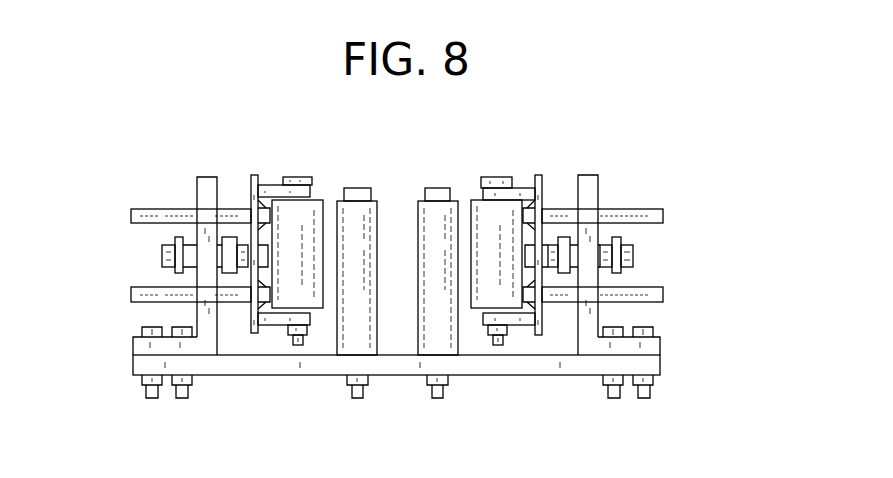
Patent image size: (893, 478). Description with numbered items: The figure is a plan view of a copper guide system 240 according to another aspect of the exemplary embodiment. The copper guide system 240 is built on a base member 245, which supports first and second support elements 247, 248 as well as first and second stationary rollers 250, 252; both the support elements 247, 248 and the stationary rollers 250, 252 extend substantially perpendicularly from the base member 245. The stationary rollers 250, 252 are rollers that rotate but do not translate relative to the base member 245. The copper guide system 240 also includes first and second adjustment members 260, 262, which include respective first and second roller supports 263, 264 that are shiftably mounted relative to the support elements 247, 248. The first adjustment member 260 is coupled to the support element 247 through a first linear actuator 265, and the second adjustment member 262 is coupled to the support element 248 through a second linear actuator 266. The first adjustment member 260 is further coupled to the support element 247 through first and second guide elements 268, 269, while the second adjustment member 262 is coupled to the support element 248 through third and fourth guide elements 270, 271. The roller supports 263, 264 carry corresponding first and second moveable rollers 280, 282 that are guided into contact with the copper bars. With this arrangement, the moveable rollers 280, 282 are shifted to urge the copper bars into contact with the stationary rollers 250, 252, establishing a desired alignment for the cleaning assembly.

The copper guide system 240 is at (117, 160).
The base member 245 is at (475, 368).
The first support element 247 is at (203, 193).
The second support element 248 is at (595, 195).
The first stationary roller 250 is at (367, 327).
The second stationary roller 252 is at (432, 324).
The first adjustment member 260 is at (270, 328).
The second adjustment member 262 is at (558, 337).
The first roller support 263 is at (252, 177).
The second roller support 264 is at (540, 175).
The first linear actuator 265 is at (235, 257).
The second linear actuator 266 is at (565, 258).
The first guide element 268 is at (131, 213).
The second guide element 269 is at (131, 300).
The third guide element 270 is at (663, 215).
The fourth guide element 271 is at (645, 302).
The first moveable roller 280 is at (305, 290).
The second moveable roller 282 is at (505, 290).